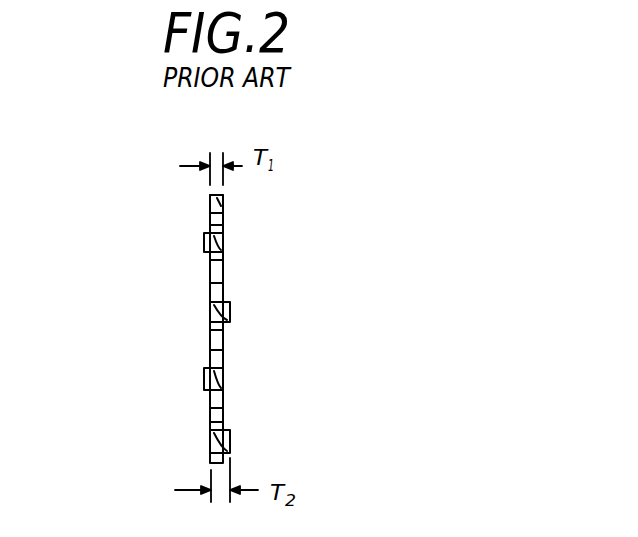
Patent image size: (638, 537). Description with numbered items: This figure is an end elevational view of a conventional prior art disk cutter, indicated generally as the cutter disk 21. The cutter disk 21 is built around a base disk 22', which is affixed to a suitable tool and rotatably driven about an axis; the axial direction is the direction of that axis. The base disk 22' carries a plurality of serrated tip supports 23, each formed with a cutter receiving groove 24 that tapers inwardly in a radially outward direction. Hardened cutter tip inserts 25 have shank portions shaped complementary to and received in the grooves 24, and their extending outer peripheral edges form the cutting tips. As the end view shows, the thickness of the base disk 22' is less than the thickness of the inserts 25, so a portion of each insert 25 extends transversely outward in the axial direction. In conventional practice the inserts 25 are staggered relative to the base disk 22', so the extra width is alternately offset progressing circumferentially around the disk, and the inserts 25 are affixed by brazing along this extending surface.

The cutter disk 21 is at (196, 204).
The base disk 22' is at (281, 190).
The serrated tip support 23 is at (223, 222).
The cutter receiving groove 24 is at (223, 247).
The hardened cutter tip insert 25 is at (204, 238).